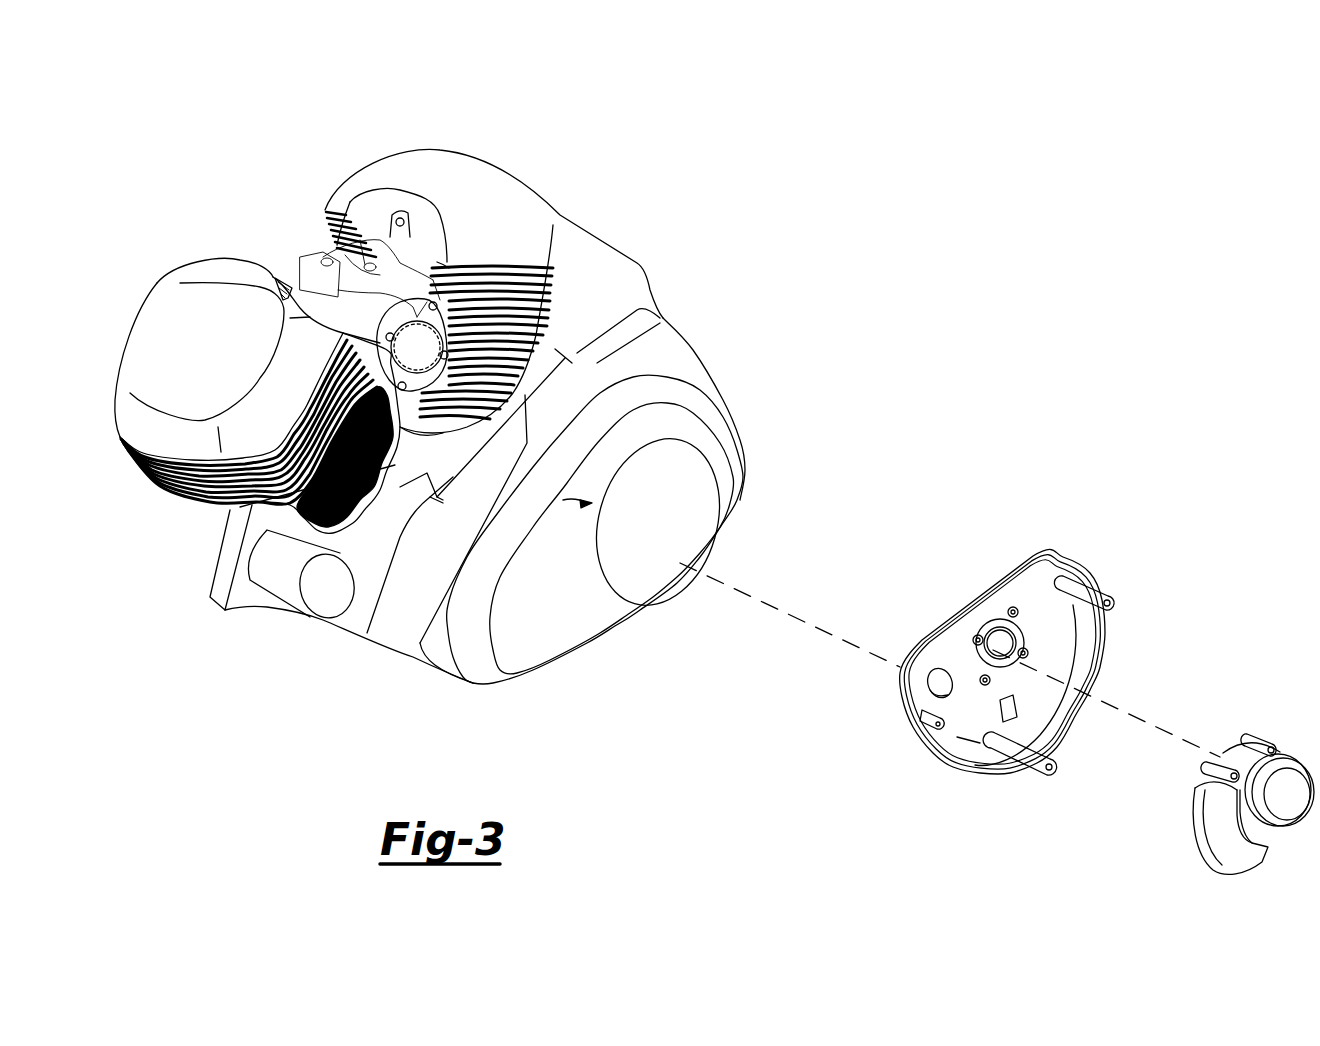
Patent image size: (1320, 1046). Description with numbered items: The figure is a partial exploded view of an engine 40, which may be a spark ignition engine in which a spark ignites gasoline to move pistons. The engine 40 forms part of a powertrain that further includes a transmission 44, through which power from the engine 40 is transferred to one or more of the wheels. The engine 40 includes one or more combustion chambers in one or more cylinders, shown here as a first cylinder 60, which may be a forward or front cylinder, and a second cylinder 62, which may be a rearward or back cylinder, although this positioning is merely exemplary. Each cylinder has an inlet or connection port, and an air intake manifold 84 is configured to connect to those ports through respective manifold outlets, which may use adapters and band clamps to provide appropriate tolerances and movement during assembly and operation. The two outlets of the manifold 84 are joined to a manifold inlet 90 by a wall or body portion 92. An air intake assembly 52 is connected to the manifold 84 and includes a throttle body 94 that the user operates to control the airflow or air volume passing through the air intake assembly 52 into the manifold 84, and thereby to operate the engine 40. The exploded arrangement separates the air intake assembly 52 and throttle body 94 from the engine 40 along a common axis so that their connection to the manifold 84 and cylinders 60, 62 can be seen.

The engine 40 is at (548, 158).
The transmission 44 is at (579, 668).
The air intake assembly 52 is at (1150, 377).
The first cylinder 60 is at (122, 327).
The second cylinder 62 is at (427, 130).
The air intake manifold 84 is at (430, 262).
The manifold inlet 90 is at (340, 333).
The wall or body portion 92 is at (350, 277).
The throttle body 94 is at (1290, 742).